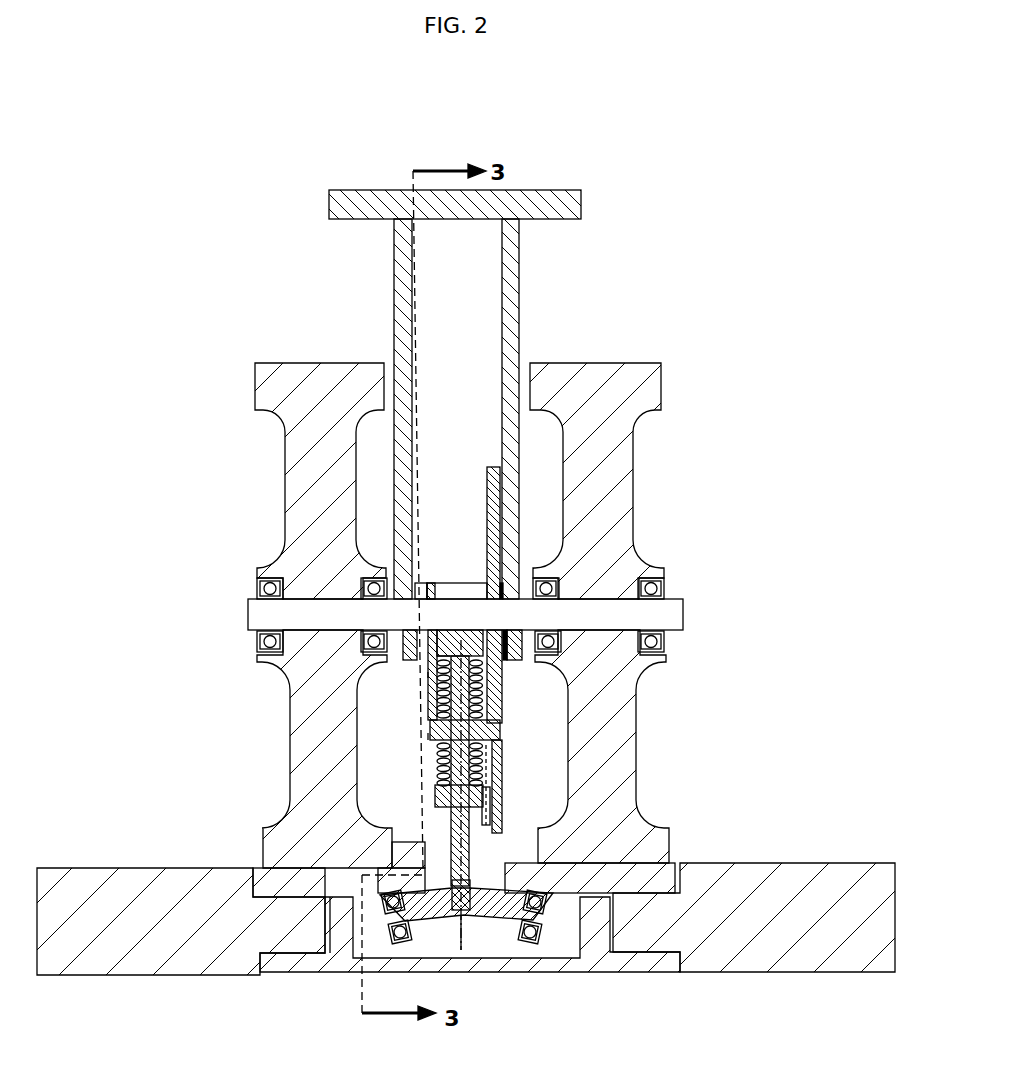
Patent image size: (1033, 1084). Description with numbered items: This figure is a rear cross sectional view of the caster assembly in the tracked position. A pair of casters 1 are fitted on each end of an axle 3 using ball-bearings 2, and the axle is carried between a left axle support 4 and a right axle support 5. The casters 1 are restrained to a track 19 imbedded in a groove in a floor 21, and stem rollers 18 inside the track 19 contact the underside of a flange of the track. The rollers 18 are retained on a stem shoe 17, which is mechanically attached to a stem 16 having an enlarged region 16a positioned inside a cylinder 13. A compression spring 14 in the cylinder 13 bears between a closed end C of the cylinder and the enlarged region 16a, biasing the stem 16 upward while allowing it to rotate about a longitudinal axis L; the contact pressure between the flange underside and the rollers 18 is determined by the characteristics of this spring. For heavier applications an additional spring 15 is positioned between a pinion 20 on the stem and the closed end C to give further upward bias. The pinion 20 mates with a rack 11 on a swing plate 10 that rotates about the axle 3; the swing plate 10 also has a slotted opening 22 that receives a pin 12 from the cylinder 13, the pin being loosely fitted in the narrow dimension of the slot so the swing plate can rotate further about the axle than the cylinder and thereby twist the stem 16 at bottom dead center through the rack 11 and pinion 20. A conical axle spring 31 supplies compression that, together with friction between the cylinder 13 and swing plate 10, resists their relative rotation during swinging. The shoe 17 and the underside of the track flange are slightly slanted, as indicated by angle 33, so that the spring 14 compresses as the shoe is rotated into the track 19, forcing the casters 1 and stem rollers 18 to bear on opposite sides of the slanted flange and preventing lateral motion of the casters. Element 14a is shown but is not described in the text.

The caster 1 is at (253, 363).
The ball-bearings 2 is at (257, 577).
The axle 3 is at (248, 618).
The left axle support 4 is at (394, 315).
The right axle support 5 is at (519, 320).
The swing plate 10 is at (490, 467).
The rack 11 is at (493, 805).
The pin 12 is at (502, 735).
The cylinder 13 is at (487, 590).
The compression spring 14 is at (428, 723).
The nut flange 14a is at (430, 674).
The additional spring 15 is at (437, 762).
The stem 16 is at (475, 860).
The enlarged region 16a is at (438, 657).
The stem shoe 17 is at (497, 922).
The stem rollers 18 is at (400, 940).
The track 19 is at (240, 868).
The pinion 20 is at (435, 800).
The floor 21 is at (773, 863).
The slotted opening 22 is at (505, 720).
The conical axle spring 31 is at (503, 598).
The angle 33 is at (352, 898).
The closed end C is at (428, 735).
The longitudinal axis L is at (465, 950).